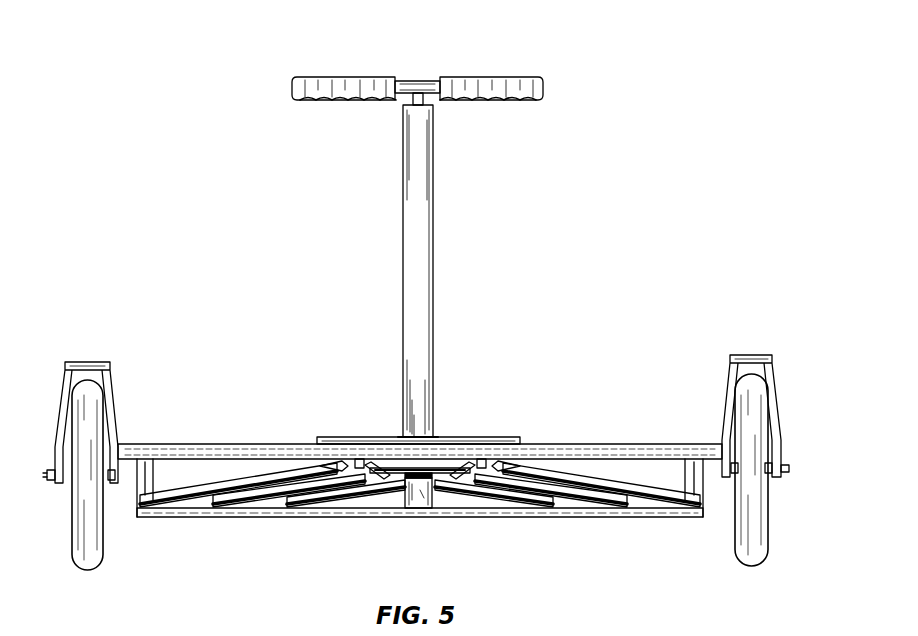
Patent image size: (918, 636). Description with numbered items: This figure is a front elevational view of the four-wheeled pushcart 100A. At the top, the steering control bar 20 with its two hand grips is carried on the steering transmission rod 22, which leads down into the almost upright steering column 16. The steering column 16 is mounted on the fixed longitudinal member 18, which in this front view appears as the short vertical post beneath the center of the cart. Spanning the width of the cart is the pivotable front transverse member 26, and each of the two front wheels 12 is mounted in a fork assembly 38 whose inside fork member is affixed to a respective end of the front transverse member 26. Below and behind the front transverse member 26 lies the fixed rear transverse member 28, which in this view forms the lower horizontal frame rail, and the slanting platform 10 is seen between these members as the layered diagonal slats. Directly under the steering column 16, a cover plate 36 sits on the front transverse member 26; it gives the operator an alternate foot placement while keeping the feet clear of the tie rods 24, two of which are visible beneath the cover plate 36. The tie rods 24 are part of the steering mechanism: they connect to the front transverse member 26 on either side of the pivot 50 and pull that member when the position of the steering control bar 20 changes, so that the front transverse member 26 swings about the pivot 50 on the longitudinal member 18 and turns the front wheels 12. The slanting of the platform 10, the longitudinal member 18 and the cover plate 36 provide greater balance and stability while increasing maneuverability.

The pushcart 100A is at (686, 79).
The steering control bar 20 is at (535, 78).
The steering transmission rod 22 is at (423, 92).
The steering column 16 is at (423, 280).
The cover plate 36 is at (382, 437).
The pivotable front transverse member 26 is at (263, 451).
The fixed rear transverse member 28 is at (632, 509).
The longitudinal member 18 is at (411, 510).
The platform 10 is at (532, 475).
The tie rods 24 is at (470, 465).
The pivot 50 is at (420, 438).
The fork assembly 38 is at (92, 361).
The front wheels 12 is at (93, 556).